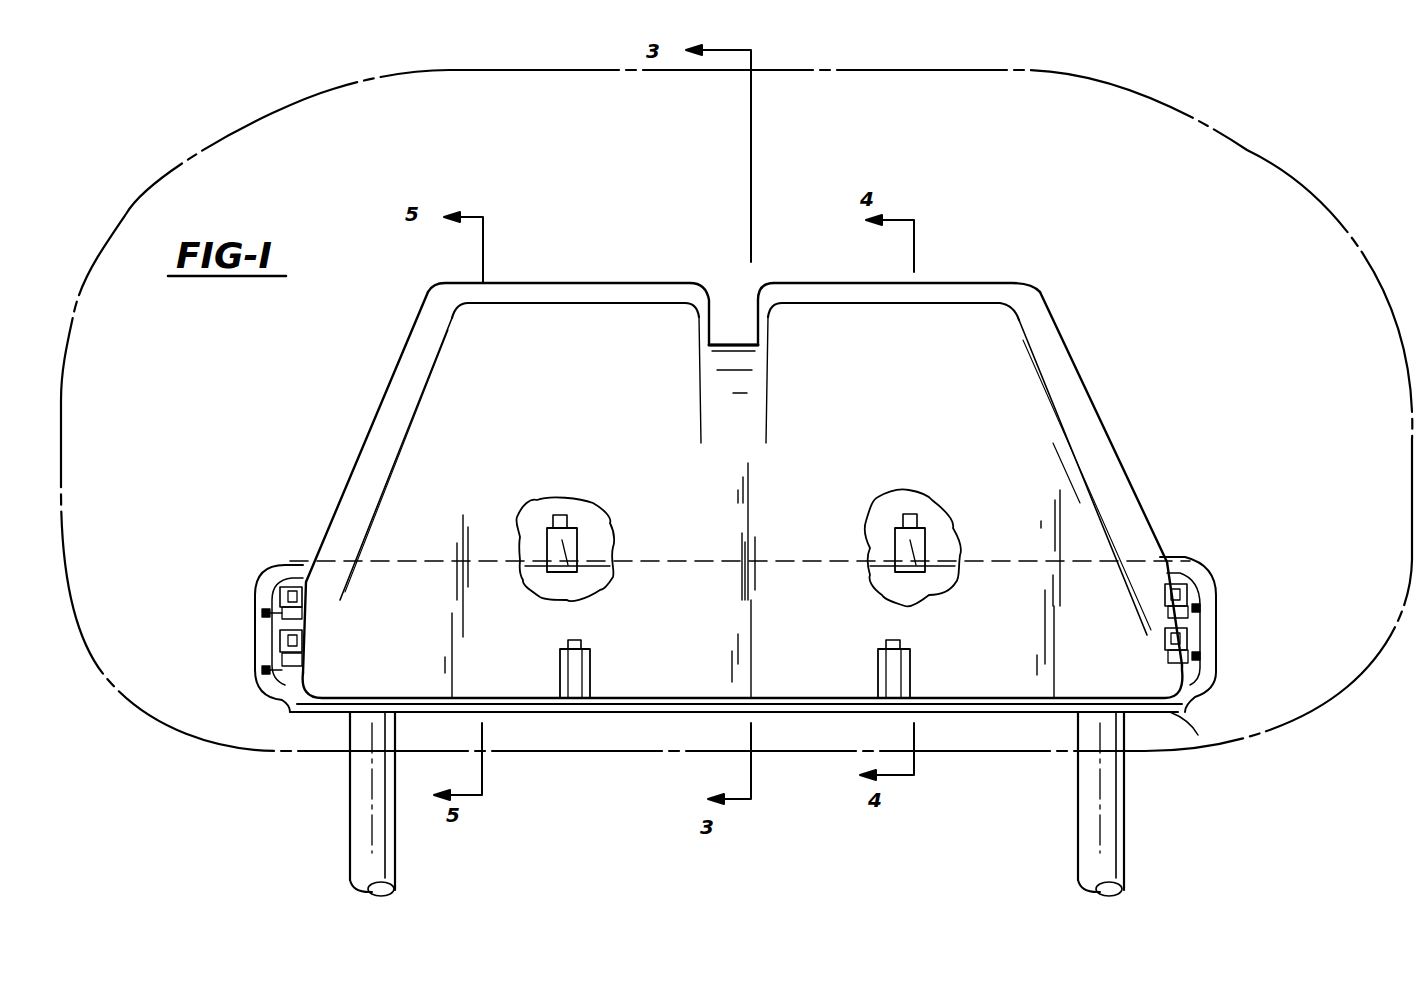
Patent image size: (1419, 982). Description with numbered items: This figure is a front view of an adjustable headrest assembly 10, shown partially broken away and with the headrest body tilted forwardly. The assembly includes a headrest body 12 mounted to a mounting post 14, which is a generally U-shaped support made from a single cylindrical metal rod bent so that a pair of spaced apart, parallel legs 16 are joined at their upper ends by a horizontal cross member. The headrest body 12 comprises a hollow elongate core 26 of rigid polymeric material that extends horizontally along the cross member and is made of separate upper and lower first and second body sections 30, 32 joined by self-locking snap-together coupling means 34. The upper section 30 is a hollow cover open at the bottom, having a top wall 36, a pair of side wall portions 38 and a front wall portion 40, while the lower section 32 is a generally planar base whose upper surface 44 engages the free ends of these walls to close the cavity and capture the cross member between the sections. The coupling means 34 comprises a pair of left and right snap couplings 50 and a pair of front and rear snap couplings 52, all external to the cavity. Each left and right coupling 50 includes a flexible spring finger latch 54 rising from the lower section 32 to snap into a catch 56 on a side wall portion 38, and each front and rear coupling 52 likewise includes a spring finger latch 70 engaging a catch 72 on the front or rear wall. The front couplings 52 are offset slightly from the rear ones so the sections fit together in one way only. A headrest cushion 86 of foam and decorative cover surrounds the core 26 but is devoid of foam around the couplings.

The adjustable headrest assembly 10 is at (1228, 126).
The headrest body 12 is at (1090, 355).
The mounting post 14 is at (1134, 774).
The legs 16 is at (357, 825).
The hollow elongate core 26 is at (1106, 420).
The first body section 30 is at (1122, 480).
The second body section 32 is at (1195, 712).
The self-locking snap-together coupling means 34 is at (1200, 562).
The top wall 36 is at (580, 290).
The side wall portions 38 is at (398, 385).
The front wall portion 40 is at (428, 478).
The upper surface 44 is at (285, 702).
The left and right snap couplings 50 is at (262, 612).
The front and rear snap couplings 52 is at (577, 522).
The spring finger latch 54 is at (290, 572).
The catch 56 is at (272, 592).
The spring finger latch 70 is at (560, 520).
The catch 72 is at (590, 560).
The headrest cushion 86 is at (1070, 78).